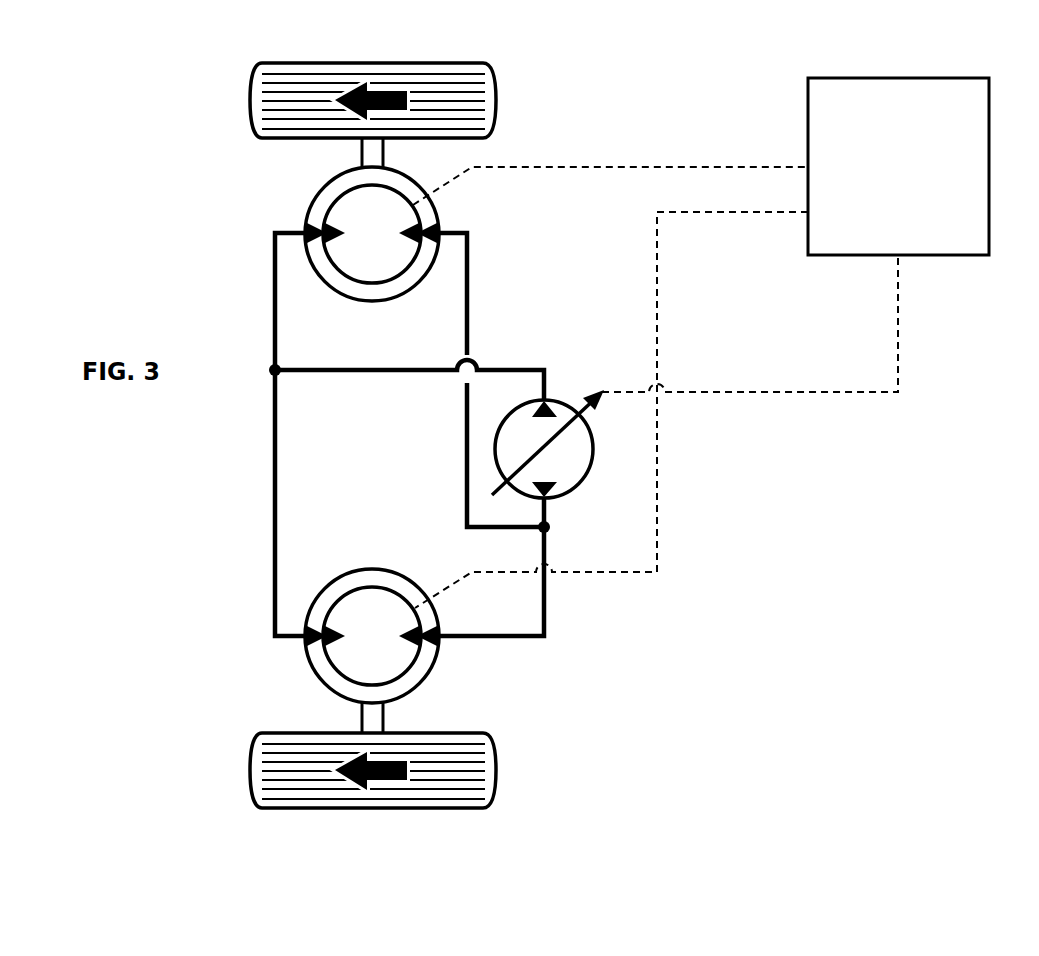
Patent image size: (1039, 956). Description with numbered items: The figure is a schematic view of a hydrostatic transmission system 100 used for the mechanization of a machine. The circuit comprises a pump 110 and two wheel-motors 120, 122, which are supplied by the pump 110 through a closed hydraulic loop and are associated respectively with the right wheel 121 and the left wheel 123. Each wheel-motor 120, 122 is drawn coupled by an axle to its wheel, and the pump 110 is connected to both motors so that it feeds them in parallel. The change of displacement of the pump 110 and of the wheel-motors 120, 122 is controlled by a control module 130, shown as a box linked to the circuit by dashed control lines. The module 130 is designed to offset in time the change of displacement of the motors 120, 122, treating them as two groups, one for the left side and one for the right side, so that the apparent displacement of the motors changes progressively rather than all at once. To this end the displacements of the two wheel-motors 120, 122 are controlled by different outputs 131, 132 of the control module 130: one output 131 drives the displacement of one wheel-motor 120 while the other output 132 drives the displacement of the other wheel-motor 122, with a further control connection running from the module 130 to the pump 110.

The hydrostatic transmission system 100 is at (240, 490).
The pump 110 is at (597, 467).
The wheel-motor 120 is at (318, 186).
The right wheel 121 is at (505, 100).
The wheel-motor 122 is at (316, 683).
The left wheel 123 is at (505, 770).
The control module 130 is at (916, 177).
The output of the control module 131 is at (728, 167).
The output of the control module 132 is at (728, 214).